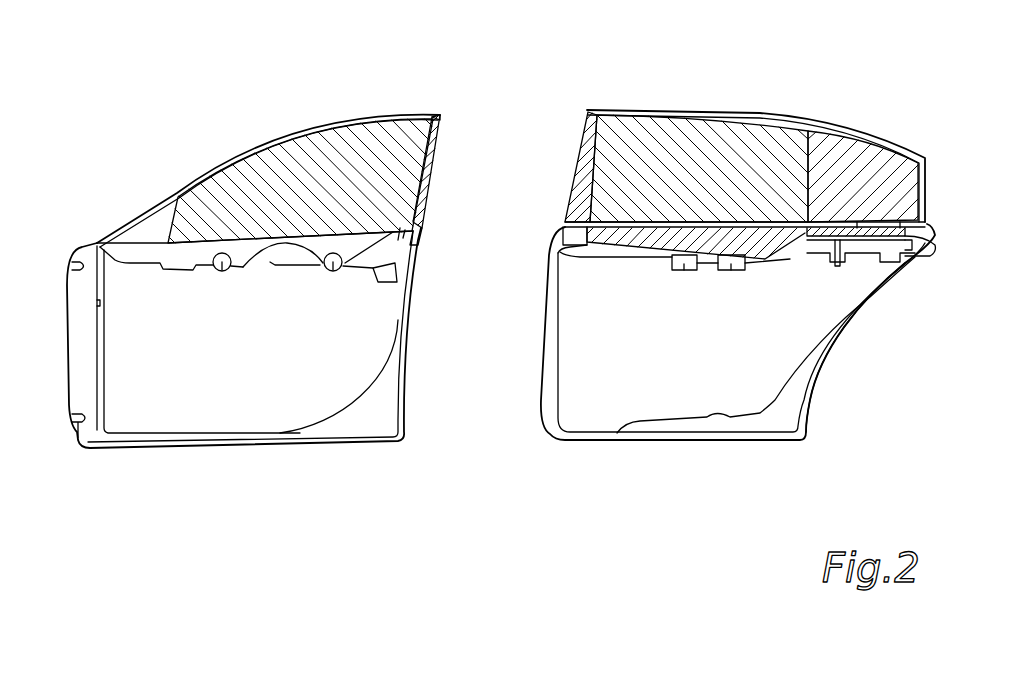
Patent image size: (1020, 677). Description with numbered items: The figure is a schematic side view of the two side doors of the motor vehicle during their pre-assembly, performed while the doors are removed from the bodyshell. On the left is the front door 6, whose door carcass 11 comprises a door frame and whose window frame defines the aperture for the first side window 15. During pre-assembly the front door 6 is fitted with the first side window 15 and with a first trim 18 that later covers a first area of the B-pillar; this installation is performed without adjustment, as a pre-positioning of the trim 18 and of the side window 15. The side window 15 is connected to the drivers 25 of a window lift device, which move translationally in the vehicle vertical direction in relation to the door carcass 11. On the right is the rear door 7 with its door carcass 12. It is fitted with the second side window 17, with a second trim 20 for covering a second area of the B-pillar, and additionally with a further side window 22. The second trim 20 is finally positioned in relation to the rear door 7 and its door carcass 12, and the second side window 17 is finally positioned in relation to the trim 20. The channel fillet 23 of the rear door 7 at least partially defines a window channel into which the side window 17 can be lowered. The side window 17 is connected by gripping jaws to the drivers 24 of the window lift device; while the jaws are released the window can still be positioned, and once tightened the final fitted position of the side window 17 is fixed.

The front door 6 is at (293, 462).
The rear door 7 is at (721, 462).
The door carcass 11 is at (415, 362).
The door carcass 12 is at (845, 361).
The first side window 15 is at (272, 168).
The second side window 17 is at (712, 133).
The first trim 18 is at (437, 116).
The second trim 20 is at (588, 110).
The further side window 22 is at (848, 160).
The channel fillet 23 is at (858, 224).
The drivers 24 is at (685, 272).
The drivers 25 is at (222, 272).